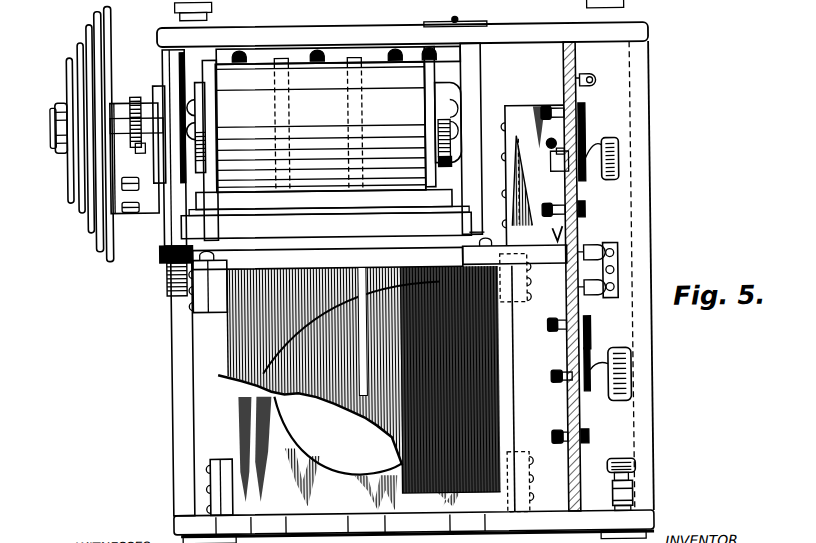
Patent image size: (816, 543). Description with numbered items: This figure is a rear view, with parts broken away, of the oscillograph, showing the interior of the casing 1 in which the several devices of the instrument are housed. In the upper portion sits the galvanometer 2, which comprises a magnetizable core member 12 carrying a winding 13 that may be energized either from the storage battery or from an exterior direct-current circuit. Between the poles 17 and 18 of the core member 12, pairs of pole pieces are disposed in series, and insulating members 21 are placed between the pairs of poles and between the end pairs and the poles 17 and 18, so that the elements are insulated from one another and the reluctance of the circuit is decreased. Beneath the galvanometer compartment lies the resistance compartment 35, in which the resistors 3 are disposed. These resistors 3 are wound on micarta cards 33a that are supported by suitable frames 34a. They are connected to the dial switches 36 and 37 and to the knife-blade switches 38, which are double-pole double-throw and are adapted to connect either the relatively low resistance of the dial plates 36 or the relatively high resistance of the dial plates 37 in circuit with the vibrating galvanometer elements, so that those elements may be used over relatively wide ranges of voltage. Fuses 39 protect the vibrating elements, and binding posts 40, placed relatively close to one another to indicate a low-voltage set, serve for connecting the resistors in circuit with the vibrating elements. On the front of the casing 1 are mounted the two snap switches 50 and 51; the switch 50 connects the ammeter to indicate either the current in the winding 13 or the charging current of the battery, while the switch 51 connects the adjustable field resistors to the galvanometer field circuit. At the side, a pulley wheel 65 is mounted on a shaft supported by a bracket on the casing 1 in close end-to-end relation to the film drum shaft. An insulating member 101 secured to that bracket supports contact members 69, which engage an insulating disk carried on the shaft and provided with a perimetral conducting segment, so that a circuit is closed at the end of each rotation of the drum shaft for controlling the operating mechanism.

The casing 1 is at (177, 414).
The galvanometer 2 is at (260, 62).
The resistor 3 is at (222, 343).
The magnetizable core member 12 is at (188, 100).
The winding 13 is at (327, 82).
The pole 17 is at (449, 84).
The pole 18 is at (203, 80).
The insulating member 21 is at (284, 58).
The micarta card 33a is at (362, 268).
The frame 34a is at (527, 410).
The resistance compartment 35 is at (533, 345).
The dial switch 36 is at (585, 119).
The dial switch 37 is at (587, 440).
The knife-blade switch 38 is at (618, 270).
The fuse 39 is at (597, 81).
The binding post 40 is at (627, 493).
The snap switch 50 is at (458, 13).
The snap switch 51 is at (579, 8).
The pulley wheel 65 is at (92, 206).
The contact member 69 is at (128, 209).
The insulating member 101 is at (117, 100).